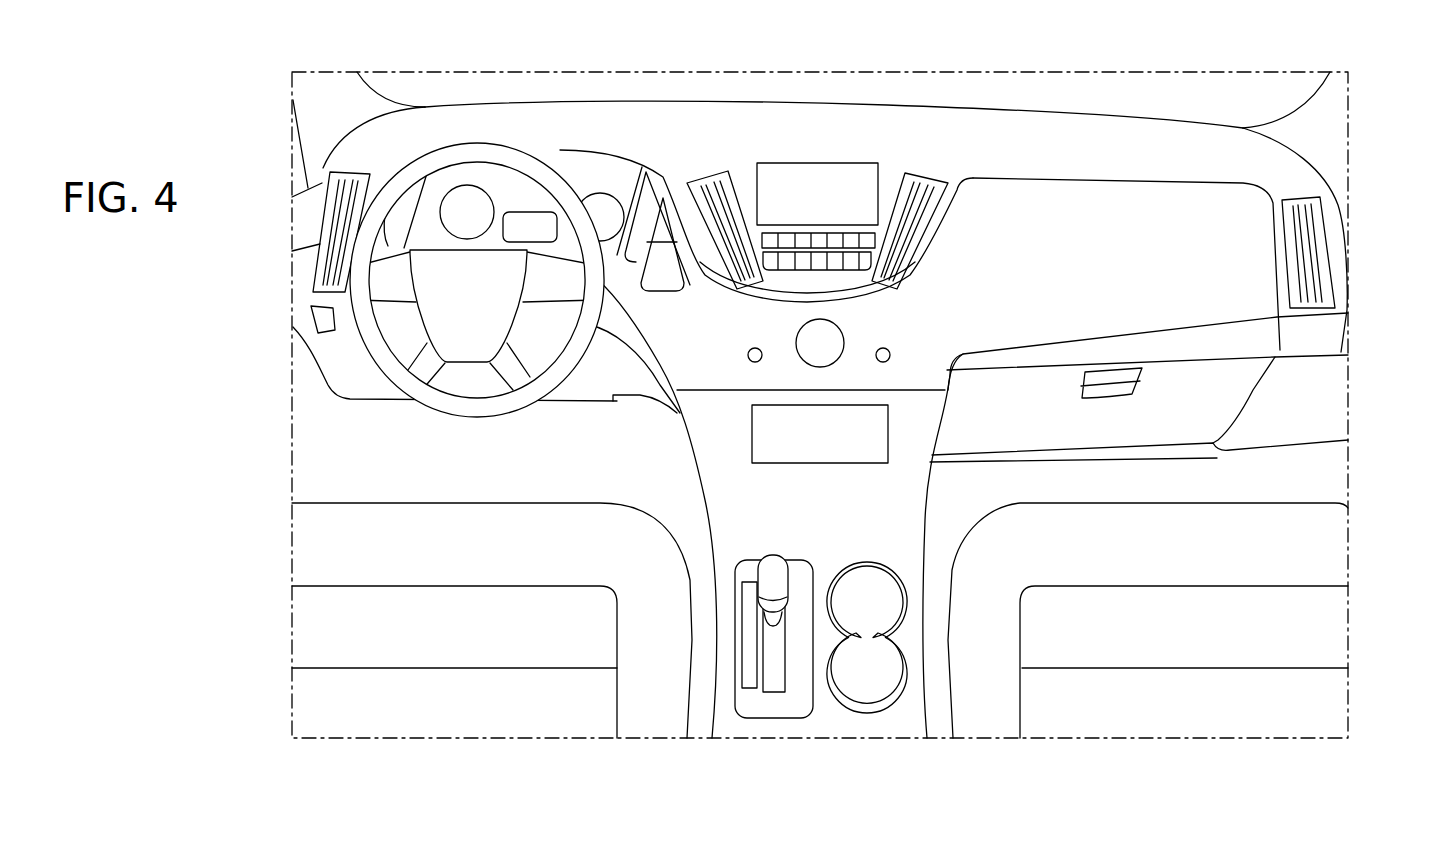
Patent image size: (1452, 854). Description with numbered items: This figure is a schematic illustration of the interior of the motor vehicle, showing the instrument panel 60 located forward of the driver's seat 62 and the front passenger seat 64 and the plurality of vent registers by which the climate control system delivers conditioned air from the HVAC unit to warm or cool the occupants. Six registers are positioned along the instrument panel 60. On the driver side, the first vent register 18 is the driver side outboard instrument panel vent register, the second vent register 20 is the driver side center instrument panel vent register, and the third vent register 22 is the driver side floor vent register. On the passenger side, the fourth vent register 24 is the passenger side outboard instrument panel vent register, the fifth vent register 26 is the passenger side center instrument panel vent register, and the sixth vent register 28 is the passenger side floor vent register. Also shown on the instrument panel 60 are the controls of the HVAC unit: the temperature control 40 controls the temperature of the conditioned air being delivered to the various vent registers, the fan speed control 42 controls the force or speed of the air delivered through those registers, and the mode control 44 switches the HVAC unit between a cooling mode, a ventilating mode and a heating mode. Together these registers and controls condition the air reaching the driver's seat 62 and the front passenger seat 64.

The first vent register 18 is at (327, 242).
The second vent register 20 is at (700, 172).
The third vent register 22 is at (642, 397).
The fourth vent register 24 is at (1322, 253).
The fifth vent register 26 is at (948, 180).
The sixth vent register 28 is at (990, 460).
The temperature control 40 is at (752, 350).
The fan speed control 42 is at (833, 343).
The mode control 44 is at (892, 356).
The instrument panel 60 is at (1155, 118).
The driver's seat 62 is at (492, 620).
The front passenger seat 64 is at (1148, 620).